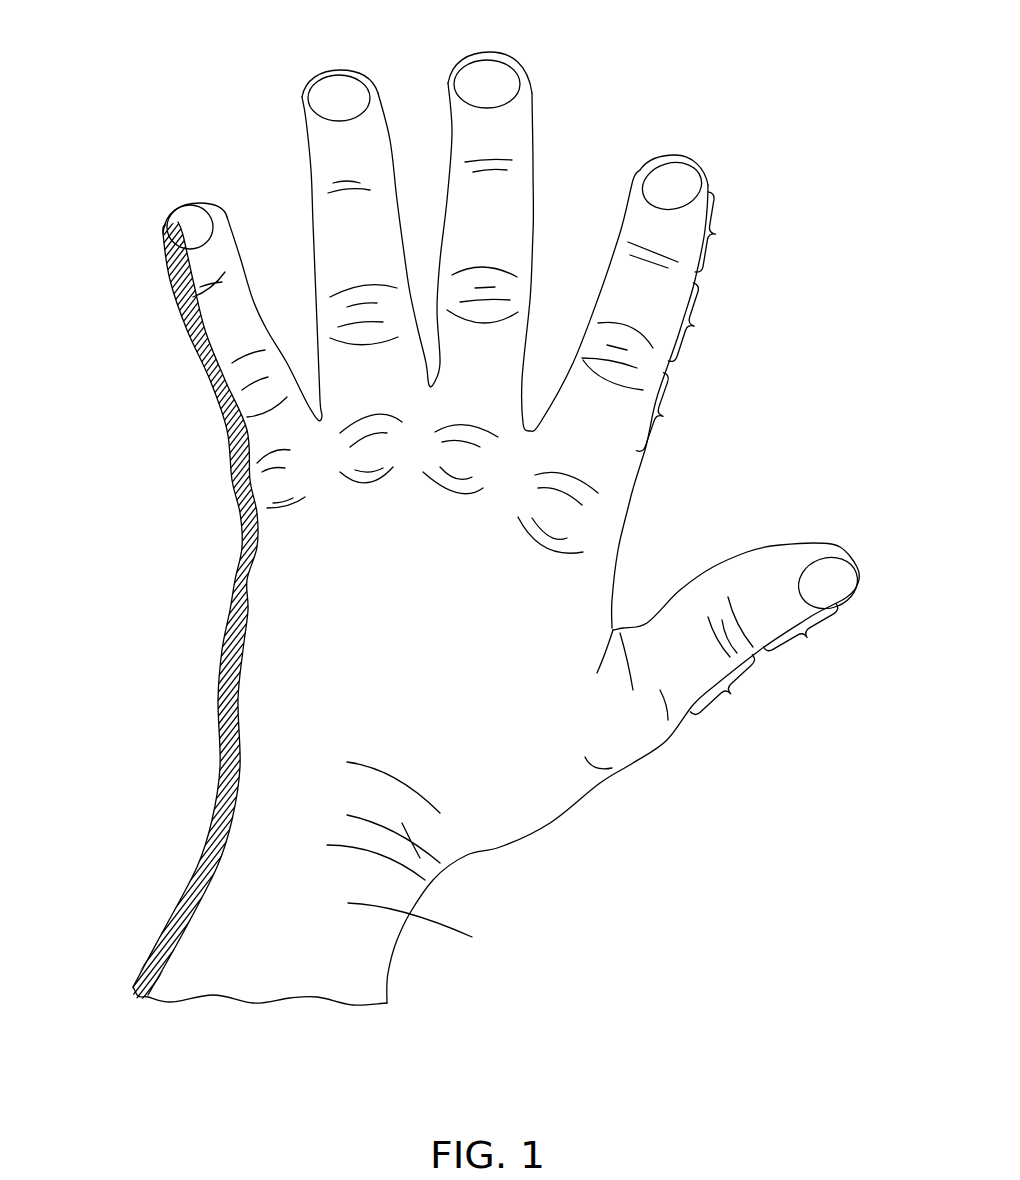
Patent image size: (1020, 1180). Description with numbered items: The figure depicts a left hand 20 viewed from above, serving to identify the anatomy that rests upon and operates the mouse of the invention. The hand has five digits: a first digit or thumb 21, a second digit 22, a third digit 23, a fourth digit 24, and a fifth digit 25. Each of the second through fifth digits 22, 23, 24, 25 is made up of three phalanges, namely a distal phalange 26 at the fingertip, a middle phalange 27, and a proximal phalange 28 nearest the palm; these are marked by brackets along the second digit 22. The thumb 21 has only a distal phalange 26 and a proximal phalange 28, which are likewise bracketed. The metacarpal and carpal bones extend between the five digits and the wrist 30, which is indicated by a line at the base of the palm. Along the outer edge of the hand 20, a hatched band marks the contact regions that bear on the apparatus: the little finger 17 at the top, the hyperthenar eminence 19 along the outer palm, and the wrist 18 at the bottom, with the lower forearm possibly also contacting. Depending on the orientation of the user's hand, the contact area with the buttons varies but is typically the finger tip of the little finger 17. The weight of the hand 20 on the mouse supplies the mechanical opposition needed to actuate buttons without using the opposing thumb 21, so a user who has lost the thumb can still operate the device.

The little finger 17 is at (210, 495).
The wrist 18 is at (190, 828).
The hyperthenar eminence 19 is at (118, 985).
The left hand 20 is at (832, 170).
The thumb 21 is at (772, 553).
The second digit 22 is at (686, 160).
The third digit 23 is at (486, 52).
The fourth digit 24 is at (333, 70).
The fifth digit 25 is at (184, 205).
The distal phalange 26 is at (766, 435).
The middle phalange 27 is at (710, 322).
The proximal phalange 28 is at (695, 553).
The wrist 30 is at (428, 933).